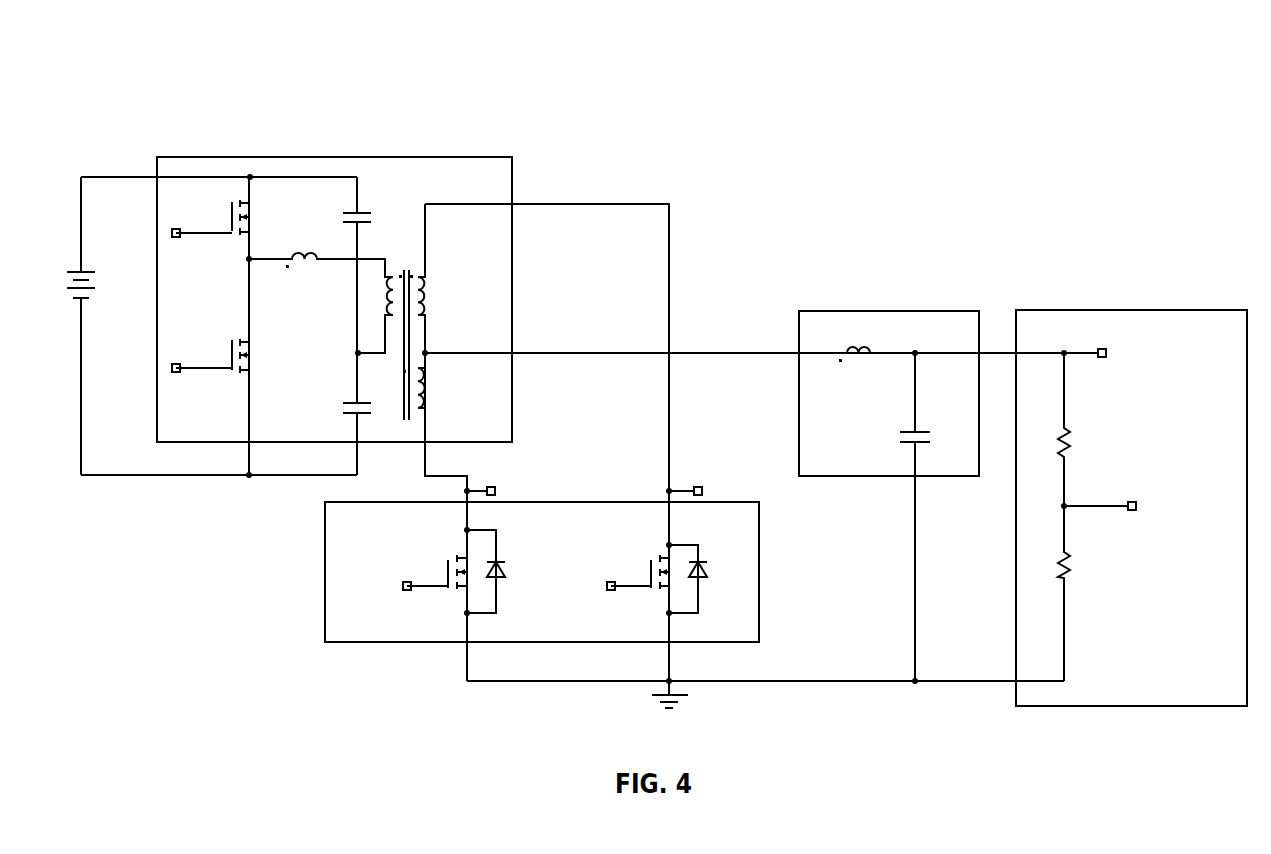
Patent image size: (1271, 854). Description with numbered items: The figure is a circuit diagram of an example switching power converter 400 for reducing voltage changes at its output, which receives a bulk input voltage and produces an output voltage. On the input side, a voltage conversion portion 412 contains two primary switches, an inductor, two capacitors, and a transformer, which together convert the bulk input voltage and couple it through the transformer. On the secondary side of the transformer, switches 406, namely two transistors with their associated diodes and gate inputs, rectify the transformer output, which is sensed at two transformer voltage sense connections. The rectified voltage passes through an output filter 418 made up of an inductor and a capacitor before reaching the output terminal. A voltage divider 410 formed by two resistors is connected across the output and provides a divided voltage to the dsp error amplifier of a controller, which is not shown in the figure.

The power converter 400 is at (193, 36).
The voltage conversion portion 412 is at (221, 157).
The switches 406 is at (325, 575).
The output filter 418 is at (864, 311).
The voltage divider 410 is at (1081, 310).